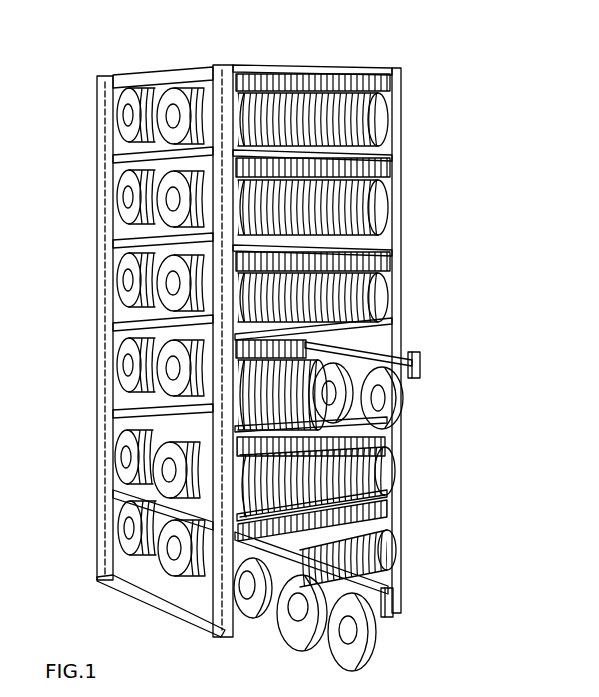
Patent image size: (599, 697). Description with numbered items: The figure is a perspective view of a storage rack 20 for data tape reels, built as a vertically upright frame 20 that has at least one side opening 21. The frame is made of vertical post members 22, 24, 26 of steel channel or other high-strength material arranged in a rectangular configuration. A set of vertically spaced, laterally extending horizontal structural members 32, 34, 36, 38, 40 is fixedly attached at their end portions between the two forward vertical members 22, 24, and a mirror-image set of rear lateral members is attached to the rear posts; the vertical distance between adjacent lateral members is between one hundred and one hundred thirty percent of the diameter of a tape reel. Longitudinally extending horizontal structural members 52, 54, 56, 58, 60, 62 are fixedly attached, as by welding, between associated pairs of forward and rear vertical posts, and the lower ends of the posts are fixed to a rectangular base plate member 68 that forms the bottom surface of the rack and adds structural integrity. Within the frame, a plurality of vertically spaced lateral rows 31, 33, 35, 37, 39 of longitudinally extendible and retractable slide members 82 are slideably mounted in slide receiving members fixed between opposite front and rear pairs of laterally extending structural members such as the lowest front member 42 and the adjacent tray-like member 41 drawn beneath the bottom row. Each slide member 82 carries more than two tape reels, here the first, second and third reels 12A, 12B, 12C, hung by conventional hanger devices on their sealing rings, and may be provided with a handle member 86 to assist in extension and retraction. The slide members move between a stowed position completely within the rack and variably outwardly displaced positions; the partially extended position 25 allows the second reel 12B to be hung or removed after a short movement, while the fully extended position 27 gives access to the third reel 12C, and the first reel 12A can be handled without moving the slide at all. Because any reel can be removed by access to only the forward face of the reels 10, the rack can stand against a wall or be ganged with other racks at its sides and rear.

The reels 10 is at (432, 58).
The first reel 12A is at (392, 408).
The second reel 12B is at (395, 452).
The third reel 12C is at (247, 623).
The storage rack / vertically upright frame 20 is at (406, 200).
The side opening 21 is at (370, 302).
The vertical post member 22 is at (400, 72).
The vertical post member 24 is at (222, 68).
The outwardly displaced position 25 is at (490, 428).
The vertical post member 26 is at (108, 103).
The fully extended position 27 is at (485, 653).
The lateral row 31 is at (378, 87).
The laterally extending horizontal structural member 32 is at (318, 67).
The lateral row 33 is at (388, 165).
The laterally extending horizontal structural member 34 is at (380, 130).
The lateral row 35 is at (378, 256).
The laterally extending horizontal structural member 36 is at (380, 220).
The lateral row 37 is at (385, 341).
The laterally extending horizontal structural member 38 is at (385, 322).
The lateral row 39 is at (238, 467).
The laterally extending horizontal structural member 40 is at (240, 463).
The inclined wire tray 41 is at (388, 525).
The laterally extending structural member 42 is at (398, 497).
The longitudinally extending horizontal structural member 52 is at (138, 76).
The longitudinally extending horizontal structural member 54 is at (113, 157).
The longitudinally extending horizontal structural member 56 is at (113, 243).
The longitudinally extending horizontal structural member 58 is at (113, 326).
The longitudinally extending horizontal structural member 60 is at (113, 410).
The longitudinally extending horizontal structural member 62 is at (113, 492).
The rectangular base plate member 68 is at (125, 590).
The slide member 82 is at (412, 357).
The handle member 86 is at (421, 366).